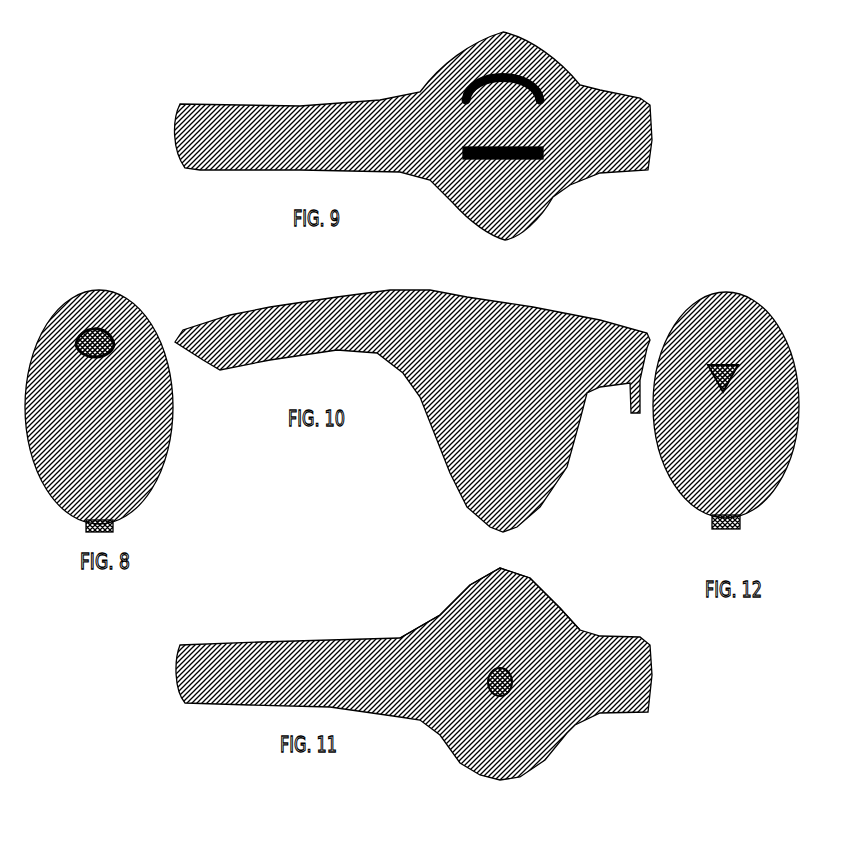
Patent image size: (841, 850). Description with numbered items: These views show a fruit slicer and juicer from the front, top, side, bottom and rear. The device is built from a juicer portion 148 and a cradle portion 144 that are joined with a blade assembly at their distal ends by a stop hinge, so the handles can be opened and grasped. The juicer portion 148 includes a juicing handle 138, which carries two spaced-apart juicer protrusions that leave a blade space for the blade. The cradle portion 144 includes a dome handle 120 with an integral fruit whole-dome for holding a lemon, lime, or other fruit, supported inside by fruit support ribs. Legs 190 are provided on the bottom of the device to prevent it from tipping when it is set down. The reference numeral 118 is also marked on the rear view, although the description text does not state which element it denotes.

In FIG. 9, the juicing handle 138 is at (313, 127).
In FIG. 8, the juicer portion 148 is at (152, 327).
In FIG. 8, the cradle portion 144 is at (147, 497).
In FIG. 12, the bulbous end portion 118 is at (735, 530).
In FIG. 11, the dome handle 120 is at (316, 635).
In FIG. 10, the legs 190 is at (407, 543).
In FIG. 11, the legs 190 is at (395, 637).